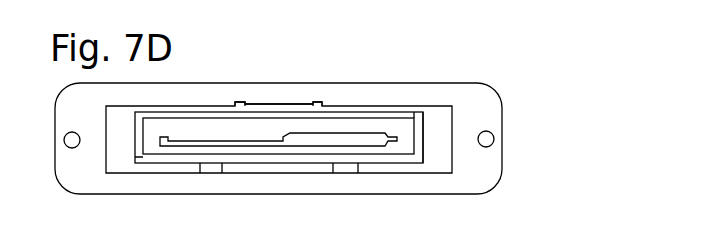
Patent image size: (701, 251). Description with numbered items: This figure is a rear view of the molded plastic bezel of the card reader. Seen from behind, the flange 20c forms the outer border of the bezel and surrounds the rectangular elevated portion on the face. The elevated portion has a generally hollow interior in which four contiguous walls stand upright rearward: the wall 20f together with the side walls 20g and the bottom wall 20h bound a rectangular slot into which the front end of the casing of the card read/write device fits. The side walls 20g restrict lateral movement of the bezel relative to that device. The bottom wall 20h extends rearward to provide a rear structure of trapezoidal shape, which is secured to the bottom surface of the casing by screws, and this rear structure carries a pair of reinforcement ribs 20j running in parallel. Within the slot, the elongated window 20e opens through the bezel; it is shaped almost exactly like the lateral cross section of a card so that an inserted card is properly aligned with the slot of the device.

The flange 20c is at (510, 110).
The wall 20f is at (392, 160).
The side walls 20g is at (417, 133).
The bottom wall 20h is at (278, 106).
The reinforcement ribs 20j is at (243, 103).
The elongated window 20e is at (332, 146).